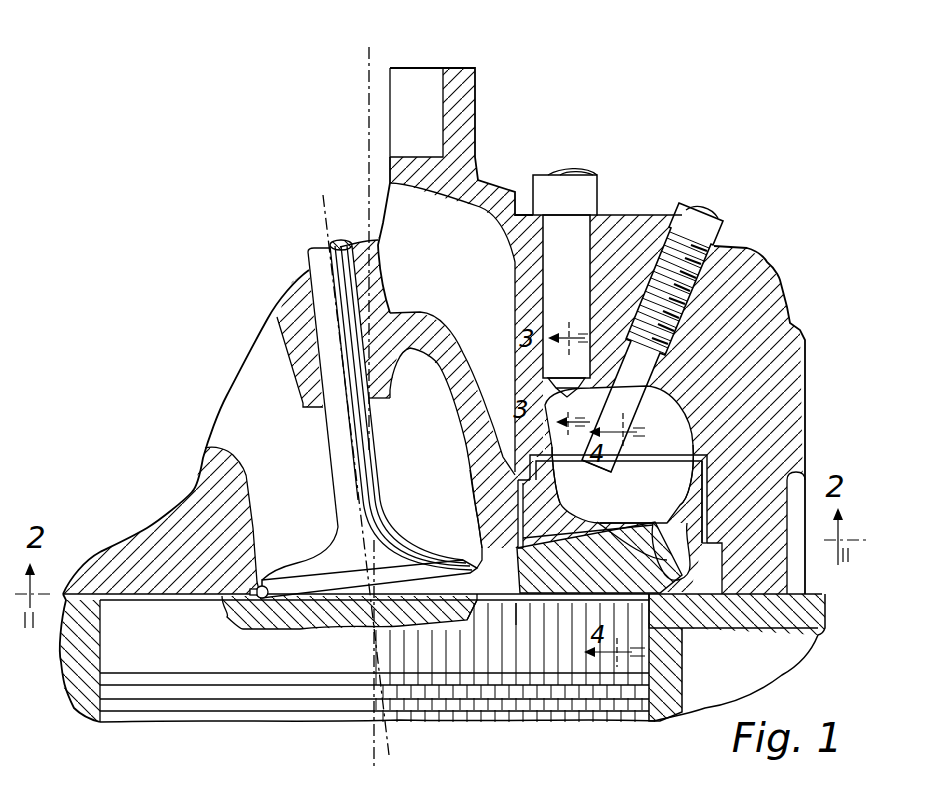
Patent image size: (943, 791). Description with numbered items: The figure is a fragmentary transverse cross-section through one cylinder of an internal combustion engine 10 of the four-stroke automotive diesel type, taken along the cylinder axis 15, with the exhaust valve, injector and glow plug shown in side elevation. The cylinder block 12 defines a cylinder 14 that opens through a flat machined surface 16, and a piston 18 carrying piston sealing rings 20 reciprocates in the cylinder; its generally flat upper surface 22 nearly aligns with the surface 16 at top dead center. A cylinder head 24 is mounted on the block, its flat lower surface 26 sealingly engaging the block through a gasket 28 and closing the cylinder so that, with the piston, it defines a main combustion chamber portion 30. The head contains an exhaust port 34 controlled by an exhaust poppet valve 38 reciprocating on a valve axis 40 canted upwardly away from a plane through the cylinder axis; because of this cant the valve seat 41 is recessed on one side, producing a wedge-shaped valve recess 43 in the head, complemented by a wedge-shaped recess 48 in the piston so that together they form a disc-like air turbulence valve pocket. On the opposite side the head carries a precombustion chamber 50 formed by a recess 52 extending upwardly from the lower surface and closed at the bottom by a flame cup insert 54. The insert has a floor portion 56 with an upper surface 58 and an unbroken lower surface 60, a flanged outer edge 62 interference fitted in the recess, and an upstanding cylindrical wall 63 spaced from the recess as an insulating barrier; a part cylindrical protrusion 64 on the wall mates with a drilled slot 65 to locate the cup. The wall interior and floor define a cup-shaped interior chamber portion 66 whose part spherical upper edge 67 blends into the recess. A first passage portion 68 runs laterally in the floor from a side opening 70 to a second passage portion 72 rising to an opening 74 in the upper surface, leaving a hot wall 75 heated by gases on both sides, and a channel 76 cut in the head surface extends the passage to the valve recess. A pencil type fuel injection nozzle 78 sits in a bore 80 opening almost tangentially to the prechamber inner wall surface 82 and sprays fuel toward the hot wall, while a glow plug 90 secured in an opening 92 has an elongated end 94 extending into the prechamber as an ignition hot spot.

The internal combustion engine 10 is at (250, 320).
The cylinder block 12 is at (75, 698).
The cylinder 14 is at (105, 722).
The cylinder axis 15 is at (372, 738).
The flat machined surface 16 is at (822, 594).
The piston 18 is at (620, 712).
The piston sealing rings 20 is at (480, 680).
The upper surface of piston 22 is at (147, 593).
The cylinder head 24 is at (793, 368).
The lower surface of cylinder head 26 is at (810, 642).
The gasket 28 is at (805, 588).
The main combustion chamber portion 30 is at (258, 549).
The exhaust port 34 is at (235, 408).
The exhaust poppet valve 38 is at (345, 482).
The valve axis 40 is at (345, 440).
The valve seat 41 is at (258, 598).
The valve recess 43 is at (478, 606).
The piston recess 48 is at (297, 607).
The precombustion chamber 50 is at (670, 407).
The prechamber recess 52 is at (655, 407).
The flame cup insert 54 is at (700, 526).
The floor portion 56 is at (688, 628).
The upper surface of floor 58 is at (528, 574).
The lower surface of floor 60 is at (509, 679).
The flanged outer edge 62 is at (713, 550).
The upstanding cylindrical wall 63 is at (700, 494).
The part cylindrical protrusion 64 is at (473, 500).
The drilled slot 65 is at (477, 527).
The cup-shaped interior chamber portion 66 is at (617, 490).
The upper edge of wall 67 is at (700, 455).
The first passage portion 68 is at (648, 606).
The side opening 70 is at (516, 608).
The second passage portion 72 is at (663, 523).
The floor upper opening 74 is at (647, 523).
The hot wall 75 is at (668, 562).
The channel 76 is at (528, 540).
The fuel injection nozzle 78 is at (579, 273).
The nozzle bore 80 is at (592, 238).
The inner wall surface of prechamber 82 is at (513, 437).
The glow plug 90 is at (694, 302).
The glow plug opening 92 is at (705, 263).
The elongated end of glow plug 94 is at (593, 473).